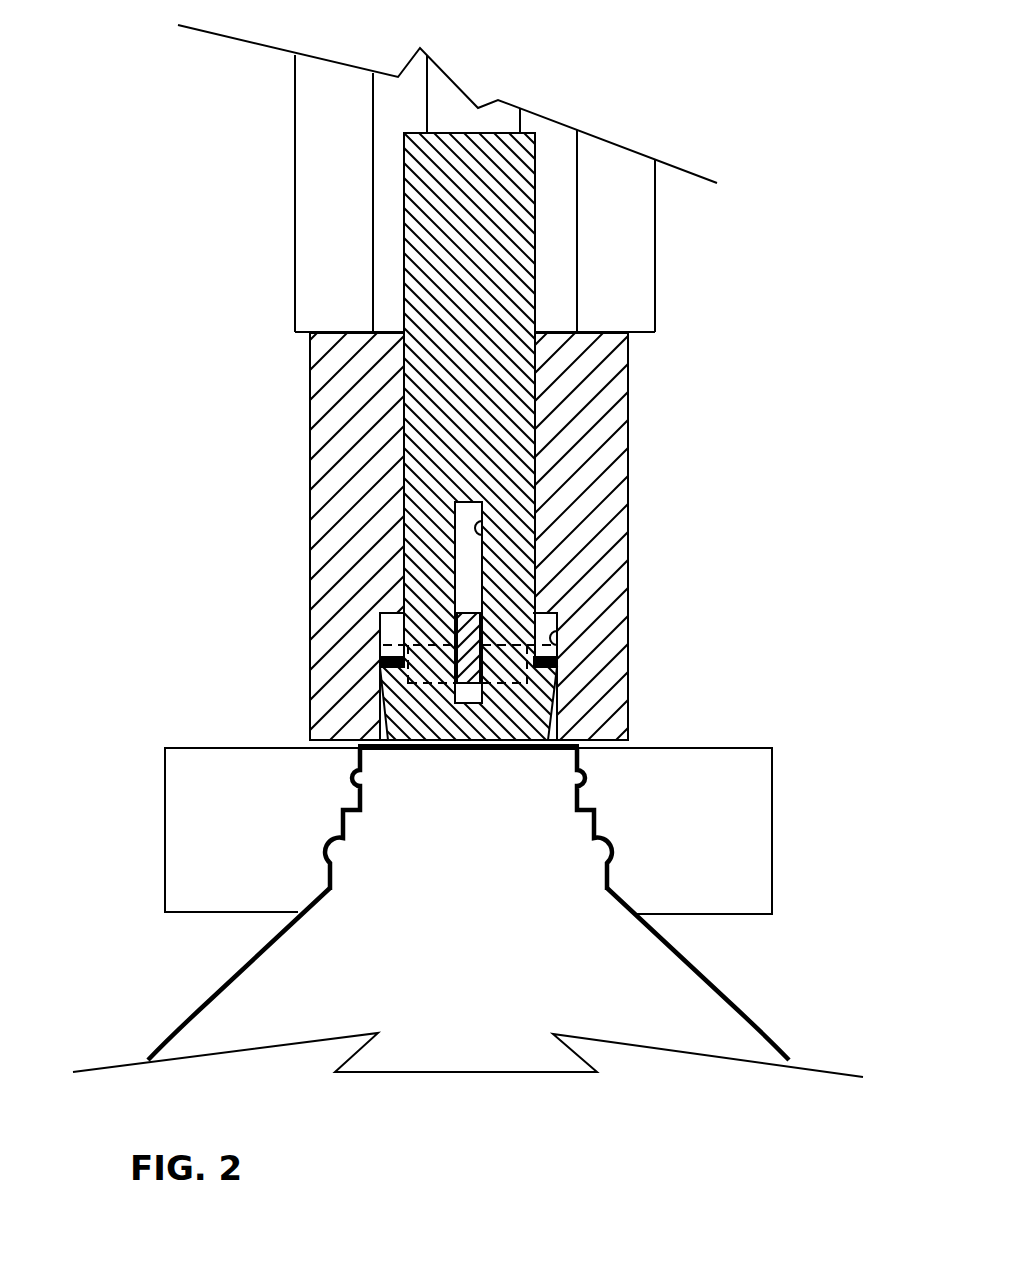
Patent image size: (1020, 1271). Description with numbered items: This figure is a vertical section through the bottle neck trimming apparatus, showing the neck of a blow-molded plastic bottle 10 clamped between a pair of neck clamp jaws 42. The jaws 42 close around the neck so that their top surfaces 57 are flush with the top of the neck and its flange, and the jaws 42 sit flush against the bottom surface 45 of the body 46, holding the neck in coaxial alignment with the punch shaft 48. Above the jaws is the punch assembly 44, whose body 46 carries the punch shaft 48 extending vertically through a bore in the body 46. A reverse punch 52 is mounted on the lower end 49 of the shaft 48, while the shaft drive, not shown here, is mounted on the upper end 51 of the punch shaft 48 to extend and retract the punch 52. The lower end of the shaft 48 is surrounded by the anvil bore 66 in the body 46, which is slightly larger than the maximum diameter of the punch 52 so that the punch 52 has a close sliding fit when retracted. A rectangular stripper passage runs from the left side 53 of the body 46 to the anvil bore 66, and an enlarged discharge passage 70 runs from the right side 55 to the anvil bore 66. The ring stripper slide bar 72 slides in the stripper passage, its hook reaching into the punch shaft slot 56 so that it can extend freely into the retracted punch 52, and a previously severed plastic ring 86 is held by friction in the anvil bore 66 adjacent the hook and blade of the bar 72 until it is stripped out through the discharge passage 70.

The plastic bottle 10 is at (758, 1012).
The neck clamp jaws 42 is at (165, 805).
The punch assembly 44 is at (634, 398).
The bottom surface of body 45 is at (627, 749).
The body 46 is at (628, 455).
The punch shaft 48 is at (404, 187).
The lower end of punch shaft 49 is at (405, 655).
The upper end of punch shaft 51 is at (535, 232).
The reverse punch 52 is at (505, 756).
The left side of body 53 is at (310, 688).
The right side of body 55 is at (628, 681).
The punch shaft slot 56 is at (483, 538).
The top surfaces of jaws 57 is at (190, 745).
The anvil bore 66 is at (562, 645).
The discharge passage 70 is at (400, 594).
The ring stripper slide bar 72 is at (473, 612).
The severed ring 86 is at (372, 658).